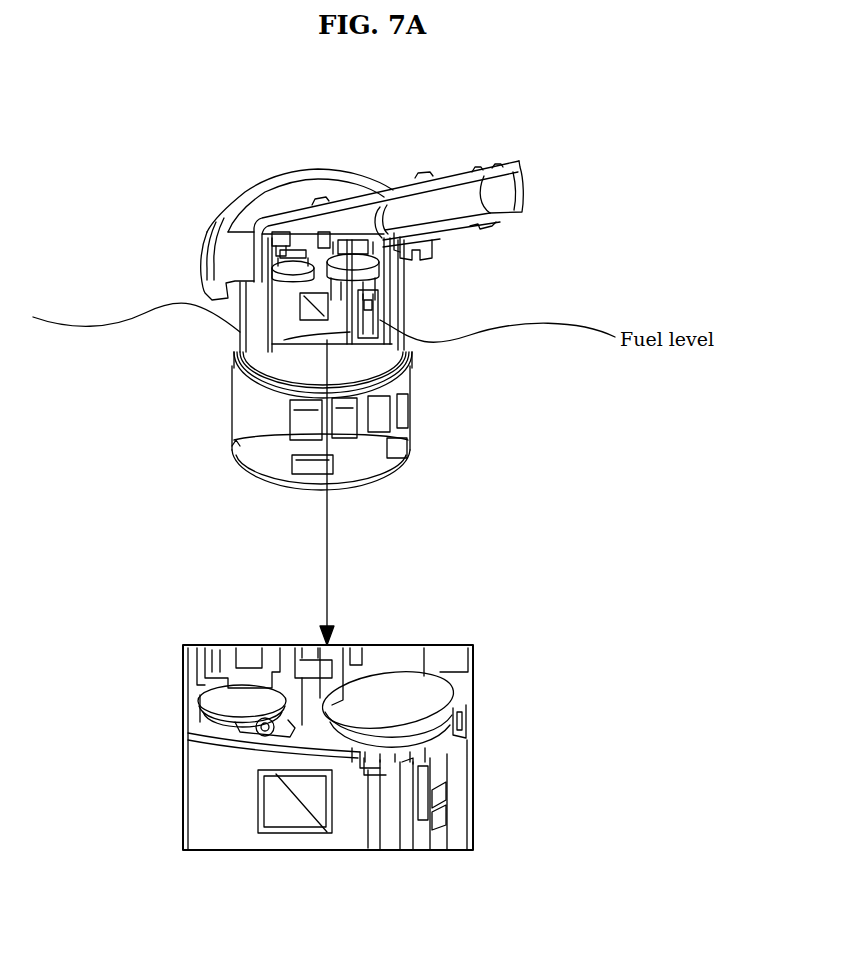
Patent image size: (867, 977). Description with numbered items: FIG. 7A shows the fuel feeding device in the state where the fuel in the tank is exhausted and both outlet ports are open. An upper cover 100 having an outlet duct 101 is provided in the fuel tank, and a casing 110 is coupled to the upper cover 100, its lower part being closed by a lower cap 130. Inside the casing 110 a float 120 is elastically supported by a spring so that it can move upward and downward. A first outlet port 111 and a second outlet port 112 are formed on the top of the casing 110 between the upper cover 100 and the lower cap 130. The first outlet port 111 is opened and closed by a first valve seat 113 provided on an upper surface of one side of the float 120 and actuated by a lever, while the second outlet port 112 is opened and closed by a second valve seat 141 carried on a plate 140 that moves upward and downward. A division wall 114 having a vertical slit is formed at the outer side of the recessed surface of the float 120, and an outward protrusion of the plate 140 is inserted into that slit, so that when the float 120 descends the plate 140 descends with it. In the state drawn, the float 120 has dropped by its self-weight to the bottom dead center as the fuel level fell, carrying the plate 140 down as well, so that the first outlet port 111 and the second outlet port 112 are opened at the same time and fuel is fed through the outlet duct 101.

The upper cover 100 is at (311, 187).
The outlet duct 101 is at (463, 192).
The casing 110 is at (240, 337).
The first outlet port 111 is at (276, 238).
The second outlet port 112 is at (345, 216).
The first valve seat 113 is at (202, 289).
The division wall 114 is at (404, 349).
The float 120 is at (233, 460).
The lower cap 130 is at (375, 468).
The plate 140 is at (380, 298).
The second valve seat 141 is at (405, 251).